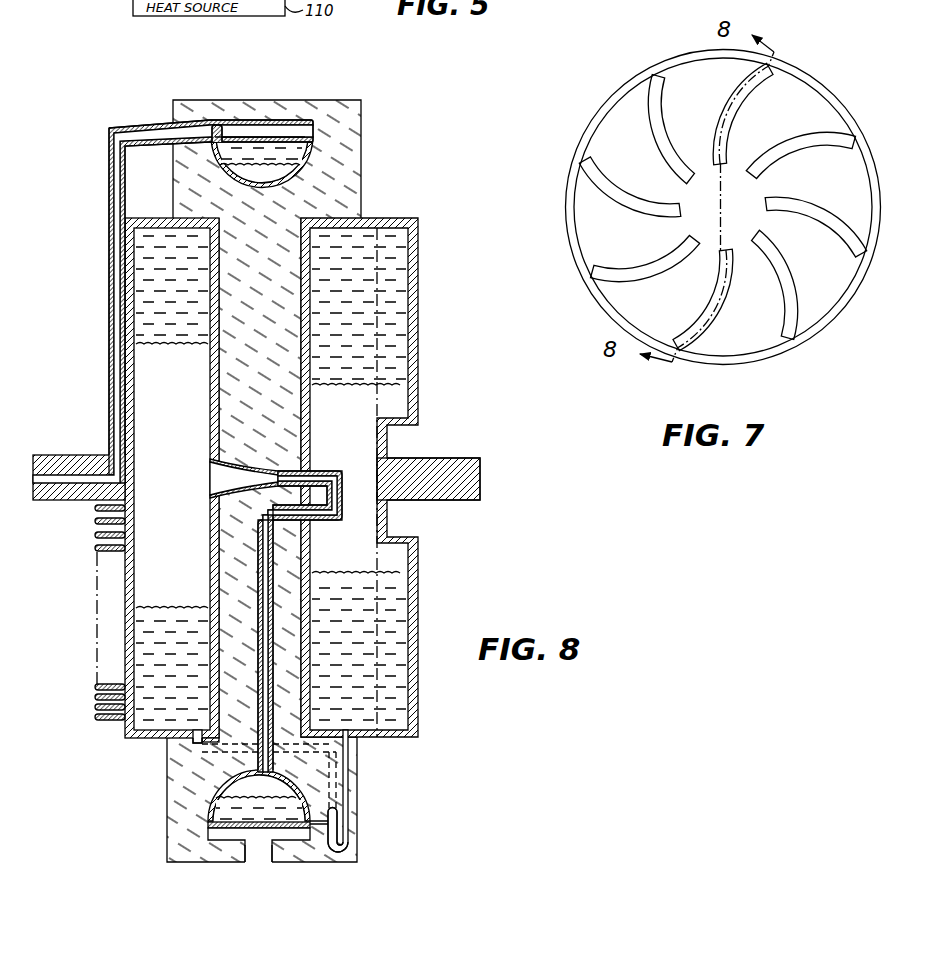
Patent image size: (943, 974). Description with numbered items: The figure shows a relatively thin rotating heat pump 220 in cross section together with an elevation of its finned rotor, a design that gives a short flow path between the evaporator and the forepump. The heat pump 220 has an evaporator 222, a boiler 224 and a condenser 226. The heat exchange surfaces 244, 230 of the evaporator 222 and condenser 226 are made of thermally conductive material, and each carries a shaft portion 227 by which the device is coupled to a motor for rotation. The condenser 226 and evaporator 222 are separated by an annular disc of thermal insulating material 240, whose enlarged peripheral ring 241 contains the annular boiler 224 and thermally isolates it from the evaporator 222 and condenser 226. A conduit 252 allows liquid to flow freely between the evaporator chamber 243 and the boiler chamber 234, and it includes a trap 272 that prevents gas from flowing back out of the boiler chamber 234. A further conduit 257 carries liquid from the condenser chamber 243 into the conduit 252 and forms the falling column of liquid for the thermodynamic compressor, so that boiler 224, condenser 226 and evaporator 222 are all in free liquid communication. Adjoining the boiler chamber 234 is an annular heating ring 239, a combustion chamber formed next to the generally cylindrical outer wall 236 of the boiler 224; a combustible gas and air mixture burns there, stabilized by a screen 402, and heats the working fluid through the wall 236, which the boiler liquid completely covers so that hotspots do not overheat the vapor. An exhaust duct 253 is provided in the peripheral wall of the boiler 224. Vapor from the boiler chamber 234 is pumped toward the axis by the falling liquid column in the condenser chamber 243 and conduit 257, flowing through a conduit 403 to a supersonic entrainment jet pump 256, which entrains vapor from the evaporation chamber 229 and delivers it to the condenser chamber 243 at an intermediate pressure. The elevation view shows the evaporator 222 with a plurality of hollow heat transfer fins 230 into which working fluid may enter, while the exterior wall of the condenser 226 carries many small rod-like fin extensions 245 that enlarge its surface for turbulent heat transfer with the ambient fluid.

In FIG. 8, the heat pump 220 is at (382, 113).
In FIG. 8, the evaporator 222 is at (434, 722).
In FIG. 8, the boiler 224 is at (303, 840).
In FIG. 8, the condenser 226 is at (122, 740).
In FIG. 8, the shaft portion 227 is at (68, 455).
In FIG. 8, the evaporation chamber 229 is at (109, 182).
In FIG. 8, the heat transfer fins 230 is at (410, 578).
In FIG. 7, the heat transfer fins 230 is at (797, 310).
In FIG. 8, the boiler chamber 234 is at (260, 173).
In FIG. 8, the outer wall 236 is at (301, 148).
In FIG. 8, the heating ring 239 is at (283, 131).
In FIG. 8, the thermal insulating disc 240 is at (240, 378).
In FIG. 8, the peripheral ring 241 is at (361, 186).
In FIG. 7, the peripheral ring 241 is at (566, 211).
In FIG. 8, the condenser chamber 243 is at (153, 565).
In FIG. 8, the heat exchange surface 244 is at (95, 516).
In FIG. 8, the fin extensions 245 is at (95, 698).
In FIG. 8, the conduit 252 is at (350, 765).
In FIG. 8, the exhaust duct 253 is at (257, 855).
In FIG. 8, the entrainment jet pump 256 is at (277, 446).
In FIG. 8, the conduit 257 is at (338, 797).
In FIG. 8, the trap 272 is at (340, 851).
In FIG. 8, the screen 402 is at (218, 128).
In FIG. 8, the conduit 403 is at (260, 530).